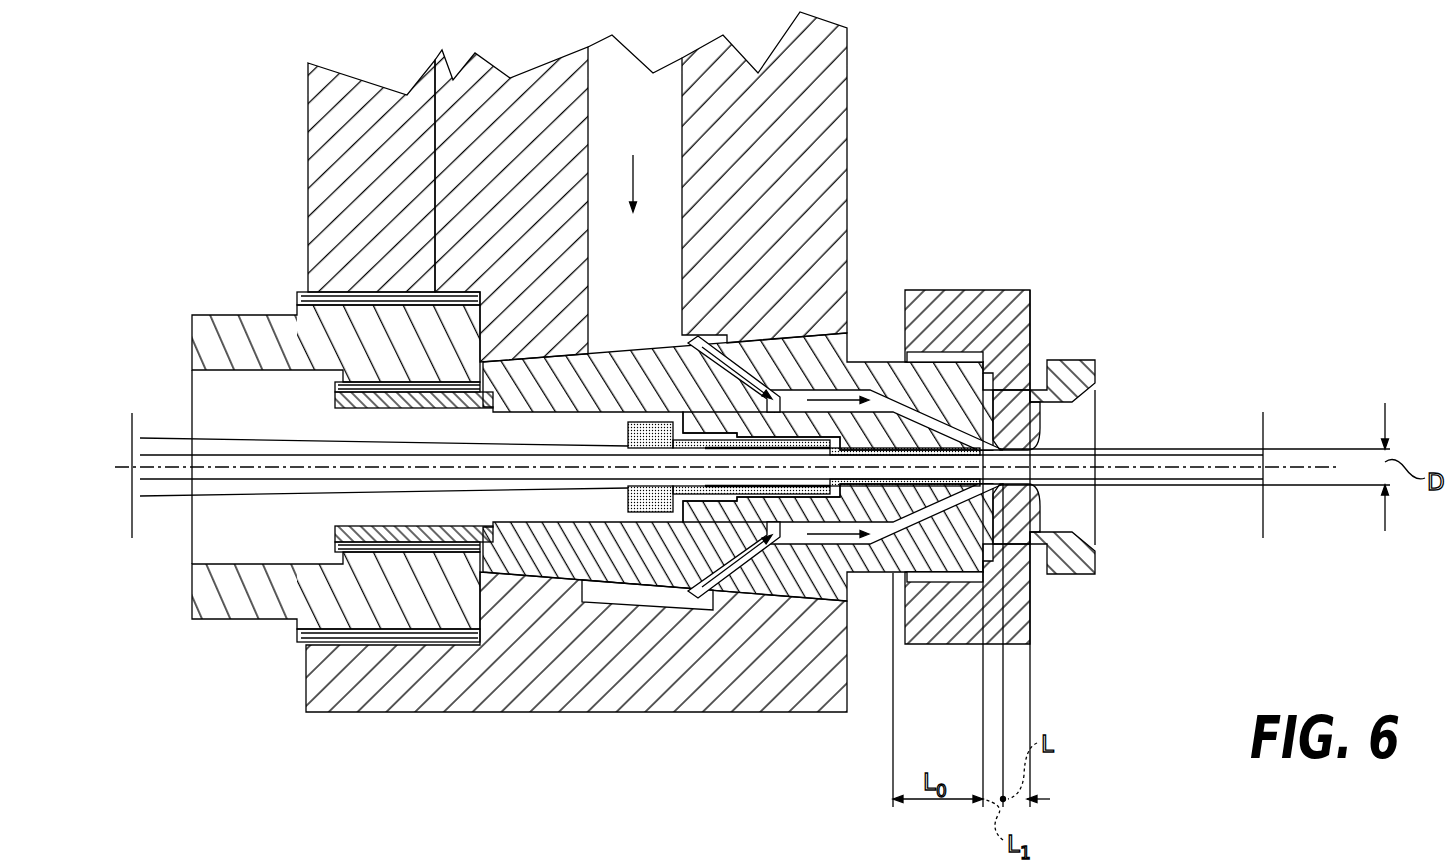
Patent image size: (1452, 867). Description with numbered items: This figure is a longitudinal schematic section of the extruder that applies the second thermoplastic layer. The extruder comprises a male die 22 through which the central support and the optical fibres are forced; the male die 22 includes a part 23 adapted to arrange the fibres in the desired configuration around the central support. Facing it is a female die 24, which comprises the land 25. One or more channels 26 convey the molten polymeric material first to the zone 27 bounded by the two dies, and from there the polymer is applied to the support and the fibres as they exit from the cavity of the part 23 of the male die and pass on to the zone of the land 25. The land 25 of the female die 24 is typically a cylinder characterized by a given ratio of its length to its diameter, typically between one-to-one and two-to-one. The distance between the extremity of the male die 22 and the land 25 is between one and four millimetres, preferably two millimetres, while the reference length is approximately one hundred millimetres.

The male die 22 is at (832, 438).
The part of the male die 23 is at (930, 447).
The female die 24 is at (1043, 417).
The land 25 is at (1033, 417).
The channels 26 is at (703, 352).
The zone 27 is at (865, 392).